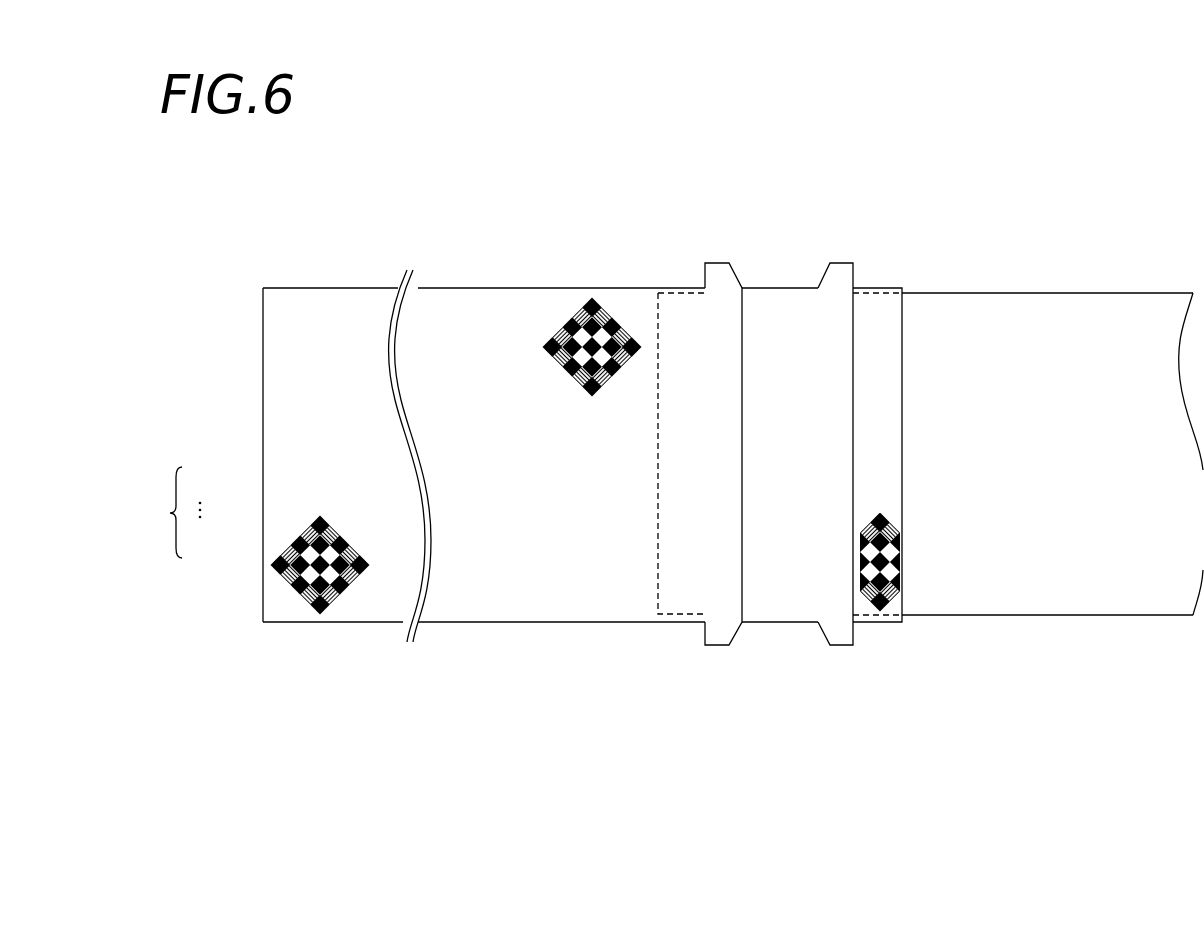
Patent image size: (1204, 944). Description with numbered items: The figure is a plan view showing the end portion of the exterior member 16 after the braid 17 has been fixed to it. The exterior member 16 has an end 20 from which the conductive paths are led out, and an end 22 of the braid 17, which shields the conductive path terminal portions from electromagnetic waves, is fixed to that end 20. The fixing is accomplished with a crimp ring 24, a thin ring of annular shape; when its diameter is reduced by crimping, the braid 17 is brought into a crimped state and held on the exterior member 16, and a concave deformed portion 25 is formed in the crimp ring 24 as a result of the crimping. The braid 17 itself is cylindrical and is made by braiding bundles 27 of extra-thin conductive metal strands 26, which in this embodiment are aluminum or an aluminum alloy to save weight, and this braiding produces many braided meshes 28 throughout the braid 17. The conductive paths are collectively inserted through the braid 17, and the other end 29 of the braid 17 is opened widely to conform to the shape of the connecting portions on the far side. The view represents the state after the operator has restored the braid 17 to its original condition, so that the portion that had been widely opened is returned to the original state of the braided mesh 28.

The exterior member 16 is at (1075, 318).
The braid 17 is at (478, 303).
The end of the exterior member 20 is at (657, 553).
The end of the braid 22 is at (883, 318).
The crimp ring 24 is at (720, 275).
The concave deformed portion 25 is at (781, 302).
The metal strands 26 is at (297, 533).
The bundles 27 is at (389, 491).
The braided meshes 28 is at (320, 587).
The other end of the braid 29 is at (272, 303).